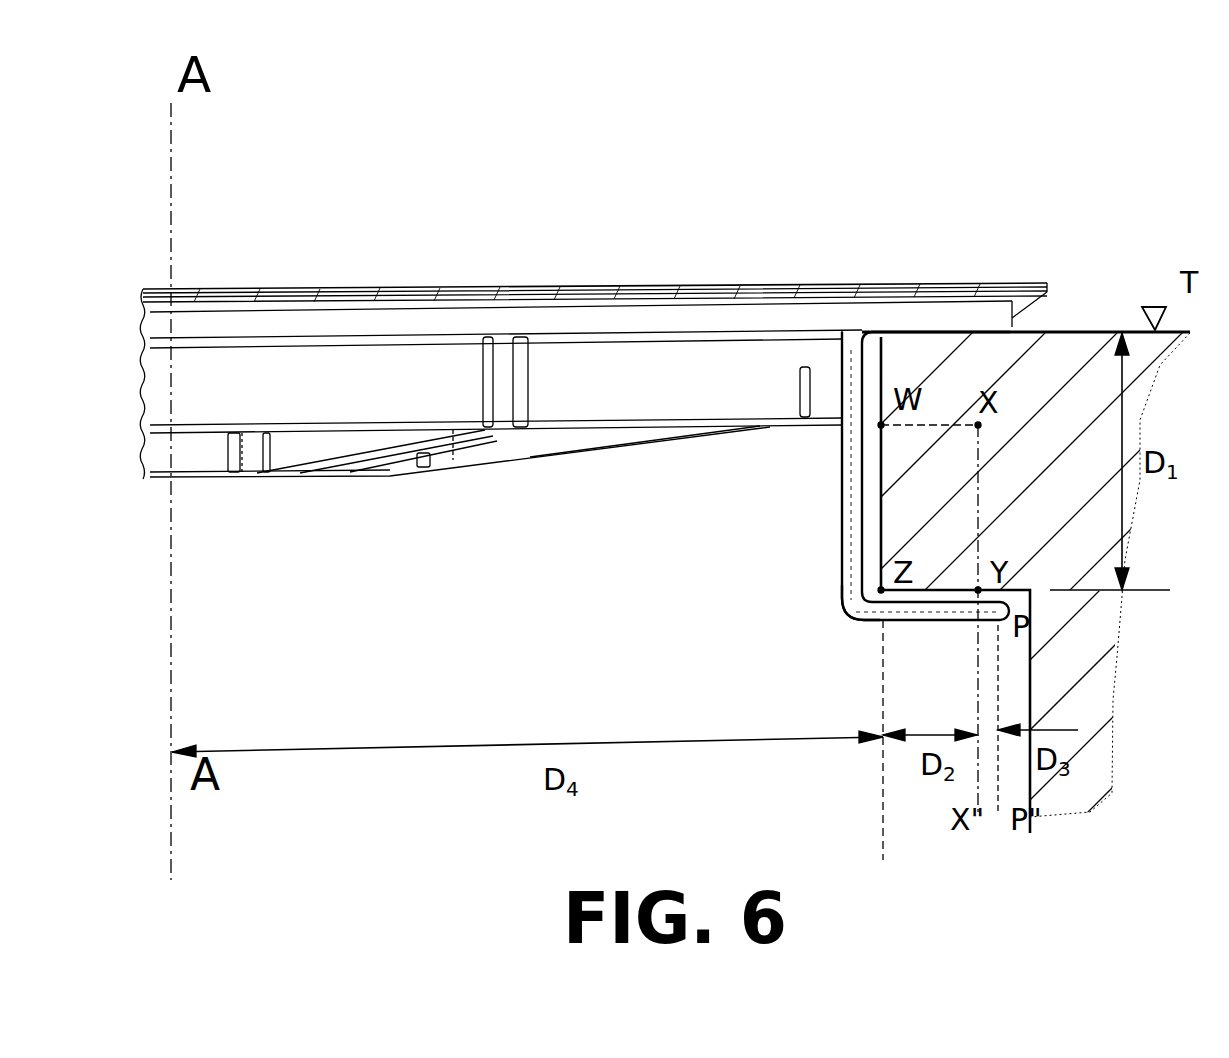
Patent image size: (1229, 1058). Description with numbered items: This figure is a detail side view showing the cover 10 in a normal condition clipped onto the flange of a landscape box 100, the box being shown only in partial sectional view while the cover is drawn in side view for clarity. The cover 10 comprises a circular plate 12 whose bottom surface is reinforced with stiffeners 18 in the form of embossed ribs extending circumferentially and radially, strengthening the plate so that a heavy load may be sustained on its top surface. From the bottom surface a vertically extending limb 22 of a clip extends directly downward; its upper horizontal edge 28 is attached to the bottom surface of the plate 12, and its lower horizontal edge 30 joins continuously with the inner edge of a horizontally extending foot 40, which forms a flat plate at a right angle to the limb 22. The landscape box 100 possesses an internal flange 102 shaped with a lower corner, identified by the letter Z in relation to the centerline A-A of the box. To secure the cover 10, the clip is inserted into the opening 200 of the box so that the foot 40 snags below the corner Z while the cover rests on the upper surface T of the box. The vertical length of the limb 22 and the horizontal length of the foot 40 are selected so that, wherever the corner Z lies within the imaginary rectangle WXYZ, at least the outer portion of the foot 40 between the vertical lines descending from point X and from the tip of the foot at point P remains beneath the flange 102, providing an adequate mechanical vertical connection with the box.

The planar cover 10 is at (438, 123).
The circular plate 12 is at (487, 320).
The stiffeners 18 is at (363, 395).
The vertically extending limb 22 is at (843, 497).
The upper horizontal edge 28 is at (852, 345).
The lower horizontal edge 30 is at (843, 607).
The horizontally extending foot 40 is at (950, 610).
The landscape box 100 is at (1085, 353).
The internal flange 102 is at (923, 473).
The opening 200 is at (627, 525).